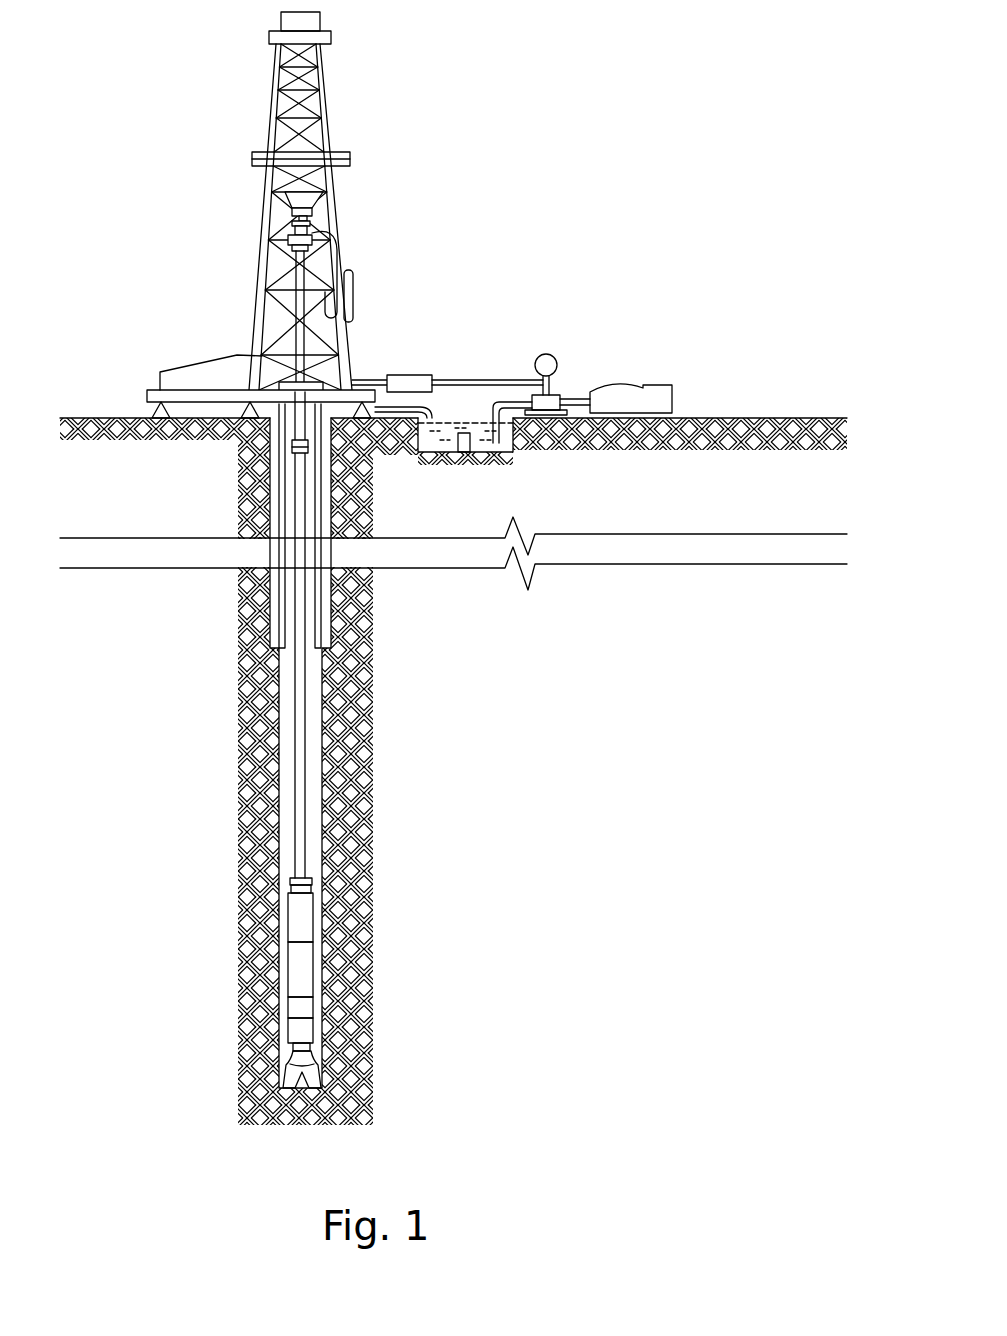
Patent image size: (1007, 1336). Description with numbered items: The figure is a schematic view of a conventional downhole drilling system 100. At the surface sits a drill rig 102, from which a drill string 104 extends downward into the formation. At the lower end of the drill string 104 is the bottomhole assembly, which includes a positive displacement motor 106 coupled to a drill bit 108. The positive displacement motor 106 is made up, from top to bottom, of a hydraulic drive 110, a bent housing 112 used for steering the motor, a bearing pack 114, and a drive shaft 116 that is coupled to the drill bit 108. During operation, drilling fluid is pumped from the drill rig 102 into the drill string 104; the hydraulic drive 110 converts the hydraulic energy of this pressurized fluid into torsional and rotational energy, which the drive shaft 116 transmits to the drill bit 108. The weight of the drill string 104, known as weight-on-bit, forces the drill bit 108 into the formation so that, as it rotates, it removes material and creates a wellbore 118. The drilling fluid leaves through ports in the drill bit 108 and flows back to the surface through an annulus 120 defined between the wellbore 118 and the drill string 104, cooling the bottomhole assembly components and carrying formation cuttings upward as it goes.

The downhole drilling system 100 is at (625, 60).
The drill rig 102 is at (338, 232).
The drill string 104 is at (305, 707).
The positive displacement motor 106 is at (303, 990).
The drill bit 108 is at (290, 1073).
The hydraulic drive 110 is at (298, 968).
The bent housing 112 is at (298, 1008).
The bearing pack 114 is at (298, 1030).
The drive shaft 116 is at (292, 1052).
The wellbore 118 is at (280, 851).
The annulus 120 is at (315, 783).